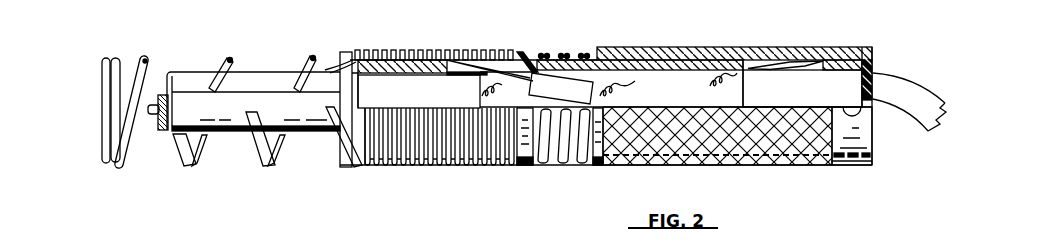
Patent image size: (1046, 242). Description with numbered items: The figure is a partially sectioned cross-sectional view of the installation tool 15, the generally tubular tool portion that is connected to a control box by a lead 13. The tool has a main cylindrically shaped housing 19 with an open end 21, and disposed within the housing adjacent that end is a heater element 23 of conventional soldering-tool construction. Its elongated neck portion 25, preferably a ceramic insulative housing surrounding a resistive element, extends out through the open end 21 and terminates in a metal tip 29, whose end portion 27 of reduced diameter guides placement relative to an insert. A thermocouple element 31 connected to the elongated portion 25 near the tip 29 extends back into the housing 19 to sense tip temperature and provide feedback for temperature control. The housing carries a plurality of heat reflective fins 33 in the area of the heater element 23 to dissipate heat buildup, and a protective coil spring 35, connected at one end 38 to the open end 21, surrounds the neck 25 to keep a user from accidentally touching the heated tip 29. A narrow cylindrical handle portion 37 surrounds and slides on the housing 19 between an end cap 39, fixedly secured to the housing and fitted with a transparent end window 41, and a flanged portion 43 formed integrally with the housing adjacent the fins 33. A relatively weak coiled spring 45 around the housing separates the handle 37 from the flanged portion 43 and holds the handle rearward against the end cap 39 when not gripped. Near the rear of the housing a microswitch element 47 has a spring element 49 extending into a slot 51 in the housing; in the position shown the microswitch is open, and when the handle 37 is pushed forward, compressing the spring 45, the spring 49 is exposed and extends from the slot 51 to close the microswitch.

The lead 13 is at (905, 99).
The installation tool 15 is at (645, 36).
The housing 19 is at (520, 52).
The open end 21 is at (348, 58).
The heater element 23 is at (404, 90).
The elongated neck portion 25 is at (303, 112).
The end portion 27 is at (152, 114).
The tip 29 is at (162, 141).
The thermocouple element 31 is at (168, 72).
The heat reflective fins 33 is at (477, 165).
The protective coil spring 35 is at (112, 58).
The handle portion 37 is at (723, 163).
The end 38 is at (352, 165).
The end cap 39 is at (852, 148).
The transparent end window 41 is at (874, 70).
The flanged portion 43 is at (528, 166).
The coiled spring 45 is at (574, 166).
The microswitch element 47 is at (748, 77).
The spring element 49 is at (815, 63).
The slot 51 is at (827, 60).